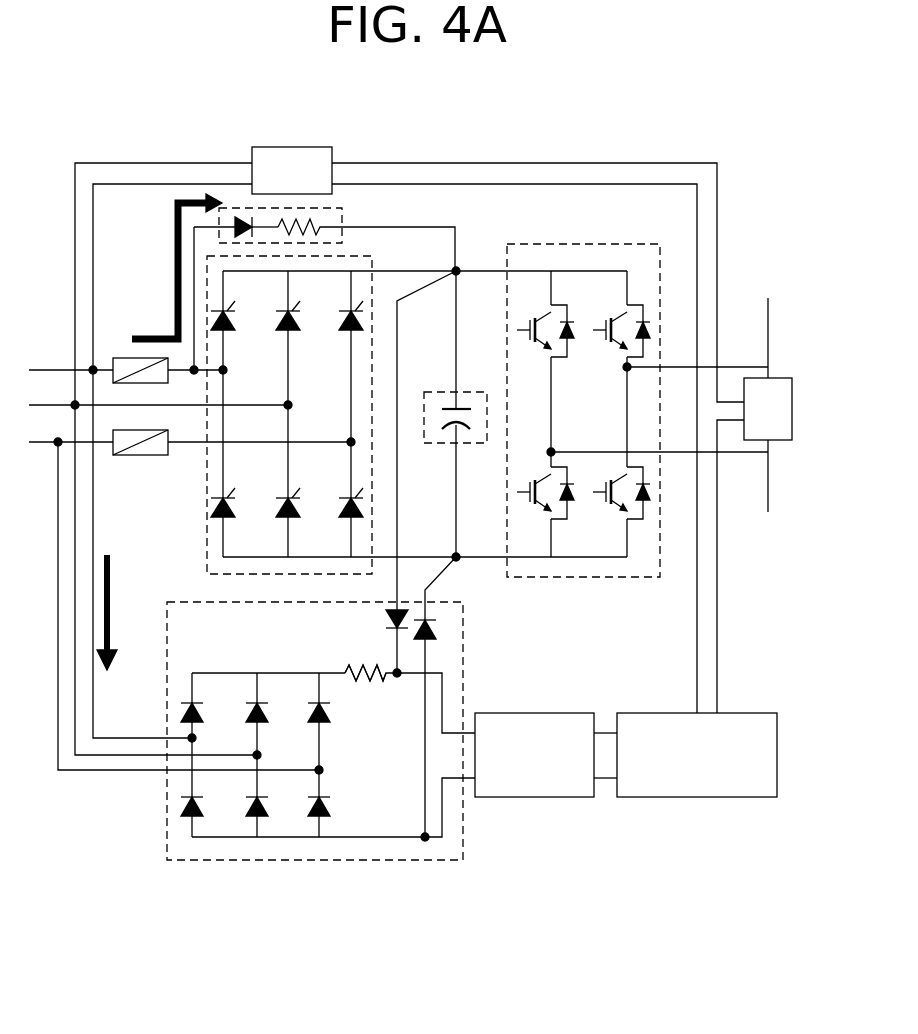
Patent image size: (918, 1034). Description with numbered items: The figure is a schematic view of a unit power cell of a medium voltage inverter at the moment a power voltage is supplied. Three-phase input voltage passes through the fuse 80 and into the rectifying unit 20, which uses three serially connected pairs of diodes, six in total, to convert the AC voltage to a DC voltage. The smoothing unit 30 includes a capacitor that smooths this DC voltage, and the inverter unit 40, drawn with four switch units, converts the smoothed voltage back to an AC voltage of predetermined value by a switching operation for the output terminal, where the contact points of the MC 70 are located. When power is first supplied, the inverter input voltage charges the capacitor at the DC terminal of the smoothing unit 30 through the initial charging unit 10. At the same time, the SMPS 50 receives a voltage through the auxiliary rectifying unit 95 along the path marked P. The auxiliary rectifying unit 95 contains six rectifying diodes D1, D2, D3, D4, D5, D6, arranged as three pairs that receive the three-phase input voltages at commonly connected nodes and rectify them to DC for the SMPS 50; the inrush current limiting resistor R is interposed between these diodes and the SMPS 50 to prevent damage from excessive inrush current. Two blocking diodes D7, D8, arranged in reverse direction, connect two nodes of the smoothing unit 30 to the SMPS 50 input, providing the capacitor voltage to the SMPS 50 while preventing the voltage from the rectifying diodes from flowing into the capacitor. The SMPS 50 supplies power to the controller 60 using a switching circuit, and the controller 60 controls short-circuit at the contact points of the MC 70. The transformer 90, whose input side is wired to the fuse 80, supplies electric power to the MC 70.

The initial charging unit 10 is at (342, 211).
The rectifying unit 20 is at (207, 540).
The smoothing unit 30 is at (472, 392).
The inverter unit 40 is at (605, 244).
The SMPS 50 is at (577, 797).
The controller 60 is at (752, 797).
The MC 70 is at (790, 378).
The fuse 80 is at (160, 455).
The transformer 90 is at (320, 147).
The auxiliary rectifying unit 95 is at (428, 860).
The voltage supply path P is at (113, 613).
The inrush current limiting resistor R is at (365, 662).
The rectifying diode D1 is at (207, 715).
The rectifying diode D2 is at (207, 807).
The rectifying diode D3 is at (272, 715).
The rectifying diode D4 is at (272, 807).
The rectifying diode D5 is at (334, 715).
The rectifying diode D6 is at (334, 807).
The blocking diode D7 is at (381, 622).
The blocking diode D8 is at (436, 643).